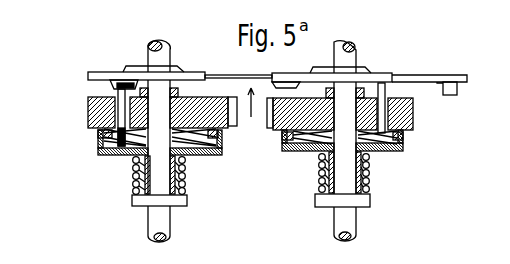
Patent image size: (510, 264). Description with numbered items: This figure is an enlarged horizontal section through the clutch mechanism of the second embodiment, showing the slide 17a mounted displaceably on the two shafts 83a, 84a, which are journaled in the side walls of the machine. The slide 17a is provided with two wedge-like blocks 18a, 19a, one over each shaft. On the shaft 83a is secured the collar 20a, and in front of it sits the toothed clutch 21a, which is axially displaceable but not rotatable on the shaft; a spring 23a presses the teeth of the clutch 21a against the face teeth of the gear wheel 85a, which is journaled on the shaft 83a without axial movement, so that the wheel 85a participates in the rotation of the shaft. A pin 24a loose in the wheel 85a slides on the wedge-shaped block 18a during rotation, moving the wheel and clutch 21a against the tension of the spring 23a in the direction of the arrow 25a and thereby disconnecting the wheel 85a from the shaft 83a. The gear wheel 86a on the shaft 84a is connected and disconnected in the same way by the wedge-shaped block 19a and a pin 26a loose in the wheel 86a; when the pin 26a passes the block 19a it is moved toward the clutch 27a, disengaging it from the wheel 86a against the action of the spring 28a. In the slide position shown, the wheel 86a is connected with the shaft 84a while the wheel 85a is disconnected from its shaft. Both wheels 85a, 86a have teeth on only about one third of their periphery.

The slide 17a is at (250, 77).
The wedge-like block 18a is at (125, 90).
The wedge-like block 19a is at (292, 80).
The collar 20a is at (187, 198).
The toothed clutch 21a is at (132, 155).
The spring 23a is at (184, 174).
The pin 24a is at (118, 96).
The arrow 25a is at (88, 135).
The pin 26a is at (385, 87).
The clutch 27a is at (403, 148).
The spring 28a is at (368, 178).
The shaft 83a is at (165, 57).
The shaft 84a is at (352, 50).
The gear wheel 85a is at (103, 137).
The gear wheel 86a is at (285, 135).